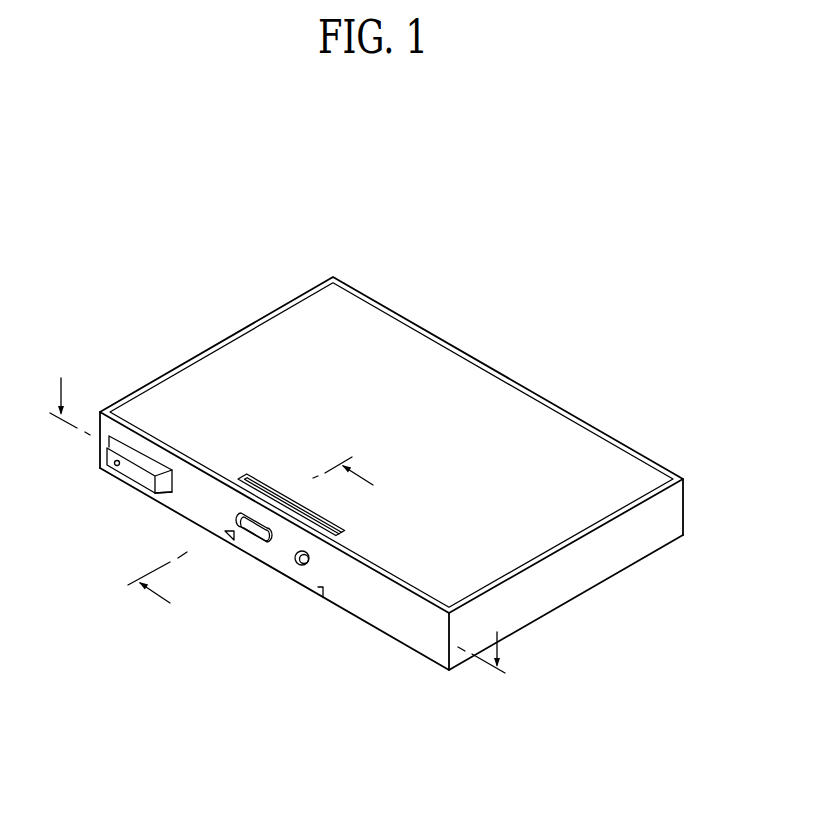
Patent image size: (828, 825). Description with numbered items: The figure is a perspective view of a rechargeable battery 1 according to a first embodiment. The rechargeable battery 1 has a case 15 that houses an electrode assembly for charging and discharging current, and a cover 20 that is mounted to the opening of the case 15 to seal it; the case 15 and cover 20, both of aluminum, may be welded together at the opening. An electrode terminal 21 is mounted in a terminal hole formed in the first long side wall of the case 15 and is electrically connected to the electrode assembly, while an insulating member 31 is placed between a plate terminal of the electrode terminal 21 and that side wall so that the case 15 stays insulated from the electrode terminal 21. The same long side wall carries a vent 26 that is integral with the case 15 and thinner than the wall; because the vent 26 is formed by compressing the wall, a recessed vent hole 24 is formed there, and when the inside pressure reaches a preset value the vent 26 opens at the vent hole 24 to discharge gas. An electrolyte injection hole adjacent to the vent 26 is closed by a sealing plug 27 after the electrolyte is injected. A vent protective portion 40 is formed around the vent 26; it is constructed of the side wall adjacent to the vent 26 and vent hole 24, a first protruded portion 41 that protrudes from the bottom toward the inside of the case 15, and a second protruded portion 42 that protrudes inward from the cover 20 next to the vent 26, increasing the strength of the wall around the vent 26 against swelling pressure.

The rechargeable battery 1 is at (462, 252).
The case 15 is at (580, 601).
The cover 20 is at (491, 405).
The electrode terminal 21 is at (117, 474).
The vent hole 24 is at (240, 532).
The vent 26 is at (267, 536).
The sealing plug 27 is at (293, 567).
The insulating member 31 is at (167, 508).
The vent protective portion 40 is at (239, 526).
The first protruded portion 41 is at (312, 586).
The second protruded portion 42 is at (257, 481).